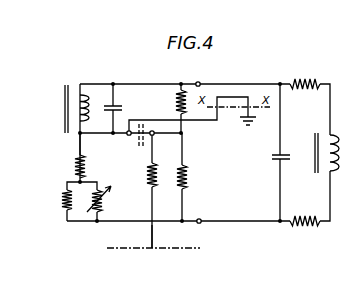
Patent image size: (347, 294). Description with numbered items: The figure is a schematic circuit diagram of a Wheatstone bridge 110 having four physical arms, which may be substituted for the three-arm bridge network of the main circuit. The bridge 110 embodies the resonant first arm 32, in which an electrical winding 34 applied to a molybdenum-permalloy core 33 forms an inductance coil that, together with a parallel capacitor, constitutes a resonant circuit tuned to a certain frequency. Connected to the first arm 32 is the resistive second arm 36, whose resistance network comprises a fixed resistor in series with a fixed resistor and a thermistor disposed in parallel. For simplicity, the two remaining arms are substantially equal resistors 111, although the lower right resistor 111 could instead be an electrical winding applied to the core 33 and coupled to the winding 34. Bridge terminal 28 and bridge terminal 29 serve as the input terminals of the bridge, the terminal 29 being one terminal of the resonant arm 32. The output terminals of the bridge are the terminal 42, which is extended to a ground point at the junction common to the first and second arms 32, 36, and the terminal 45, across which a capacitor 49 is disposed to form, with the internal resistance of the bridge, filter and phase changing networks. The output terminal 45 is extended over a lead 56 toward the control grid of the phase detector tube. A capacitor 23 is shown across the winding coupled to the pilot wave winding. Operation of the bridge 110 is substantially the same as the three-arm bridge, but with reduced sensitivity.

The first arm 32 is at (97, 92).
The molybdenum-permalloy core 33 is at (64, 98).
The electrical winding 34 is at (90, 120).
The second arm 36 is at (77, 176).
The output terminal 42 is at (128, 136).
The capacitor 49 is at (141, 137).
The output terminal 45 is at (152, 136).
The resistors 111 is at (176, 100).
The Wheatstone bridge 110 is at (232, 155).
The bridge terminal 29 is at (200, 83).
The bridge terminal 28 is at (201, 220).
The lead 56 is at (154, 233).
The capacitor 23 is at (328, 162).